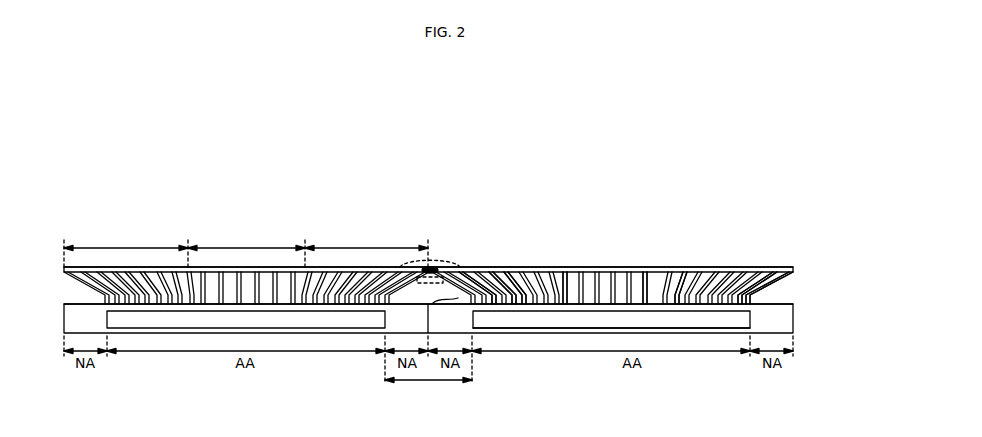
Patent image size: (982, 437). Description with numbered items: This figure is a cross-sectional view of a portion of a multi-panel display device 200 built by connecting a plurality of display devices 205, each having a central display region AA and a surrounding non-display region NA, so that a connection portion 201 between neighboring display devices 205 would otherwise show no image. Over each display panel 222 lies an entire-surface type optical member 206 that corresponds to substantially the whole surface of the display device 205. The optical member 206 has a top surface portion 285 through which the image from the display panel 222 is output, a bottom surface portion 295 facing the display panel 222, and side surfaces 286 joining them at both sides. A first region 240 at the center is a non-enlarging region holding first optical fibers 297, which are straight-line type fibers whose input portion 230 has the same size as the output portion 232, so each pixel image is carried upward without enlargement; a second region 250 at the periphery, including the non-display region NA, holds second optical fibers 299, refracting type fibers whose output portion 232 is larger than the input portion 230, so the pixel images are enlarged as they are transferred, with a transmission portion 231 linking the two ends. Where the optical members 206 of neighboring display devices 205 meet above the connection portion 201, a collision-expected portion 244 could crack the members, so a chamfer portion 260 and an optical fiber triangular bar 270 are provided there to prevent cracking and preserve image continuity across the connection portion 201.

The multi-panel display device 200 is at (669, 146).
The connection portion 201 is at (428, 367).
The display device 205 is at (706, 332).
The entire-surface type optical member 206 is at (799, 265).
The display panel 222 is at (750, 320).
The input portion 230 is at (525, 306).
The optical fiber 231 is at (514, 306).
The output portion 232 is at (494, 306).
The first region 240 is at (308, 248).
The collision-expected portion 244 is at (453, 262).
The second region 250 is at (246, 248).
The chamfer portion 260 is at (425, 266).
The optical fiber triangular bar 270 is at (432, 266).
The top surface portion 285 is at (648, 271).
The side surface 286 is at (770, 288).
The bottom surface portion 295 is at (660, 330).
The first optical fiber 297 is at (570, 271).
The second optical fiber 299 is at (686, 271).